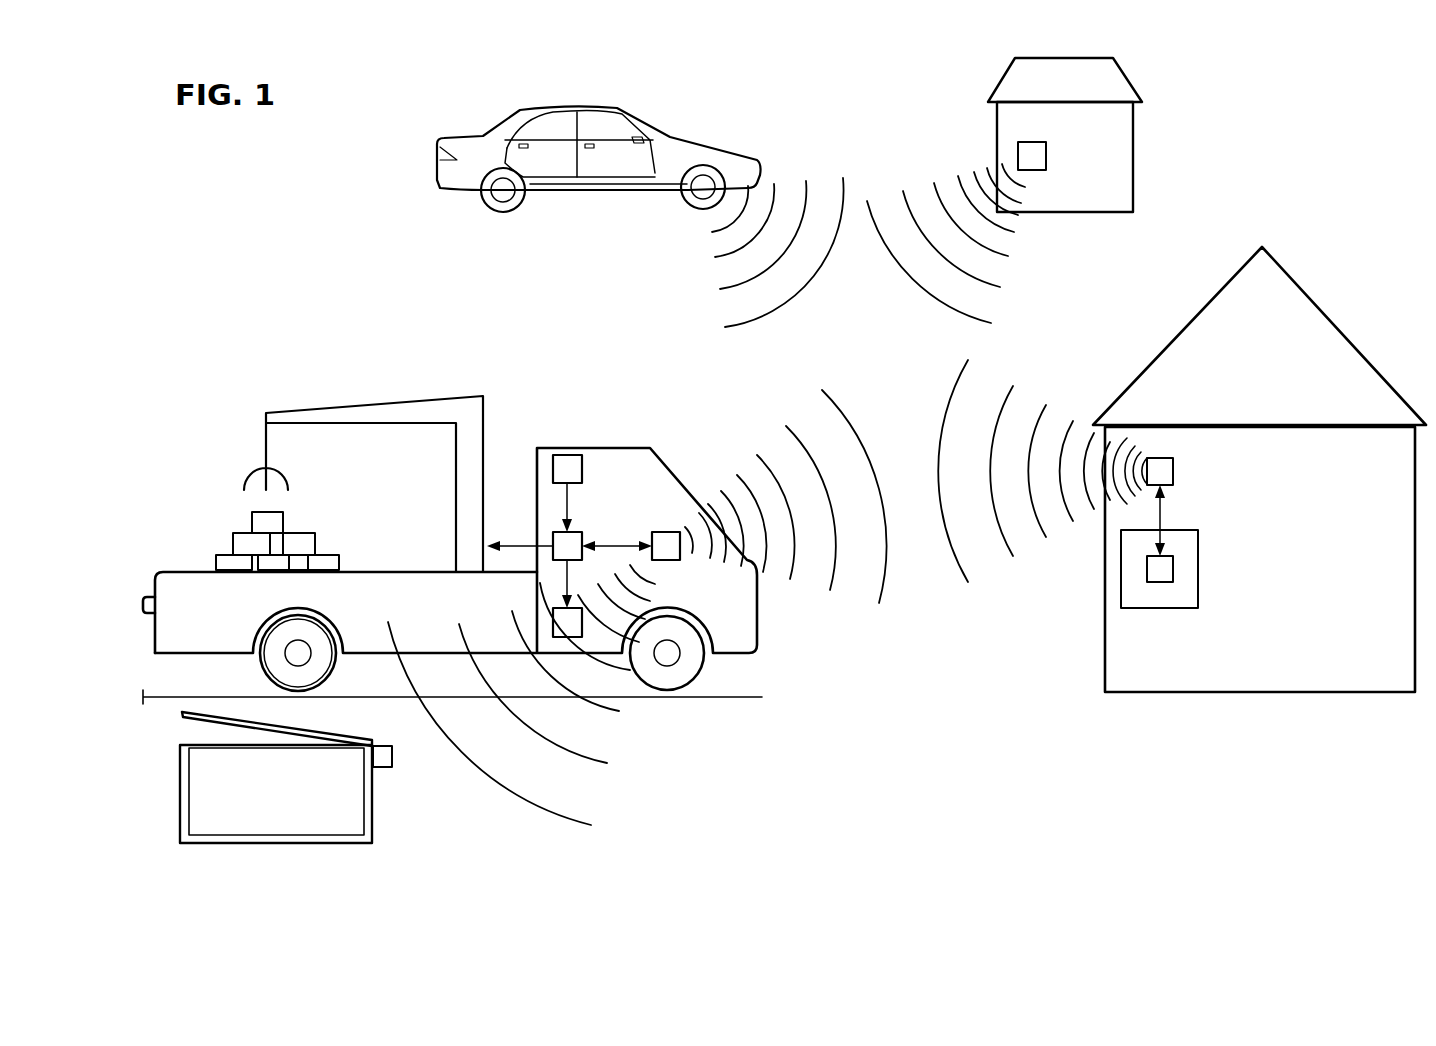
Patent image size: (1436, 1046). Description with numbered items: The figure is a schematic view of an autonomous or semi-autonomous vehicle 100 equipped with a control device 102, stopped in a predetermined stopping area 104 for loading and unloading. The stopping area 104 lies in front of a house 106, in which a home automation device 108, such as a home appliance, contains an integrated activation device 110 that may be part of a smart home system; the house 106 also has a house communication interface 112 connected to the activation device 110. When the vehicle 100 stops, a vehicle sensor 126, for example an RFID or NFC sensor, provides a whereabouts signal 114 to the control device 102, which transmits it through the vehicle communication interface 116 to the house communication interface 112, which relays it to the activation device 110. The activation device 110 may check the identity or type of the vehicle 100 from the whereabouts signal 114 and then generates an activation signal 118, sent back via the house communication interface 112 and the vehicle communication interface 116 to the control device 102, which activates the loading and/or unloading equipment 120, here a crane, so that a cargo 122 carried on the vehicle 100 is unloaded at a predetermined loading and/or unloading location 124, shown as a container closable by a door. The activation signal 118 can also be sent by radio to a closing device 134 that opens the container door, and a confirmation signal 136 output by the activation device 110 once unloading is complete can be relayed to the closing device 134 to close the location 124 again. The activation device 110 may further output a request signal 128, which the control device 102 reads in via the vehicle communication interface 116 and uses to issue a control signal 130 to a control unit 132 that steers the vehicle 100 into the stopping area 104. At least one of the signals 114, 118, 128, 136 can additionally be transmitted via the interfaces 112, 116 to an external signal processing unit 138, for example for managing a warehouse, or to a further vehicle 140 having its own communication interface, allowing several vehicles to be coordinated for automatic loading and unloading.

The vehicle 100 is at (628, 448).
The control device 102 is at (583, 537).
The stopping area 104 is at (722, 700).
The house 106 is at (1340, 312).
The home automation device 108 is at (1198, 545).
The activation device 110 is at (1173, 570).
The house communication interface 112 is at (1173, 472).
The whereabouts signal 114 is at (558, 498).
The vehicle communication interface 116 is at (667, 530).
The activation signal 118 is at (510, 542).
The loading and/or unloading equipment 120 is at (415, 398).
The cargo 122 is at (252, 520).
The loading and/or unloading location 124 is at (372, 830).
The vehicle sensor 126 is at (567, 455).
The request signal 128 is at (1000, 408).
The control signal 130 is at (550, 562).
The control unit 132 is at (553, 625).
The closing device 134 is at (392, 755).
The confirmation signal 136 is at (518, 793).
The external signal processing unit 138 is at (1046, 156).
The further vehicle 140 is at (578, 108).